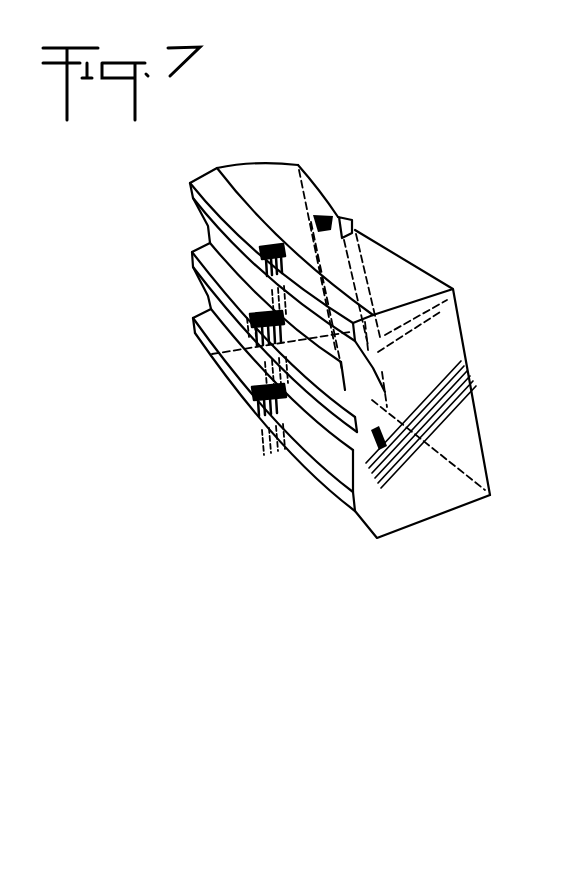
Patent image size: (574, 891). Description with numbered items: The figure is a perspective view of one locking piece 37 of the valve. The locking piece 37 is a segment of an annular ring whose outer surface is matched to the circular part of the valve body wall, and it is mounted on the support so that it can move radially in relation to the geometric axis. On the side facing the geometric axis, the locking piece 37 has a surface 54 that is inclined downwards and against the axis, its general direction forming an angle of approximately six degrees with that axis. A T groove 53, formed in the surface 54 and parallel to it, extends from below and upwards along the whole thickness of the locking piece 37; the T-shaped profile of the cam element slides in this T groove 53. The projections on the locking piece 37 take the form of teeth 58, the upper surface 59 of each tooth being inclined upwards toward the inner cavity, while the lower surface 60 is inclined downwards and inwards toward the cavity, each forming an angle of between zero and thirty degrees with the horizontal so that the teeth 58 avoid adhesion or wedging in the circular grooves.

The locking piece 37 is at (346, 385).
The T groove 53 is at (342, 220).
The surface 54 is at (450, 283).
The teeth 58 is at (337, 501).
The upper surface 59 is at (330, 461).
The lower surface 60 is at (367, 537).